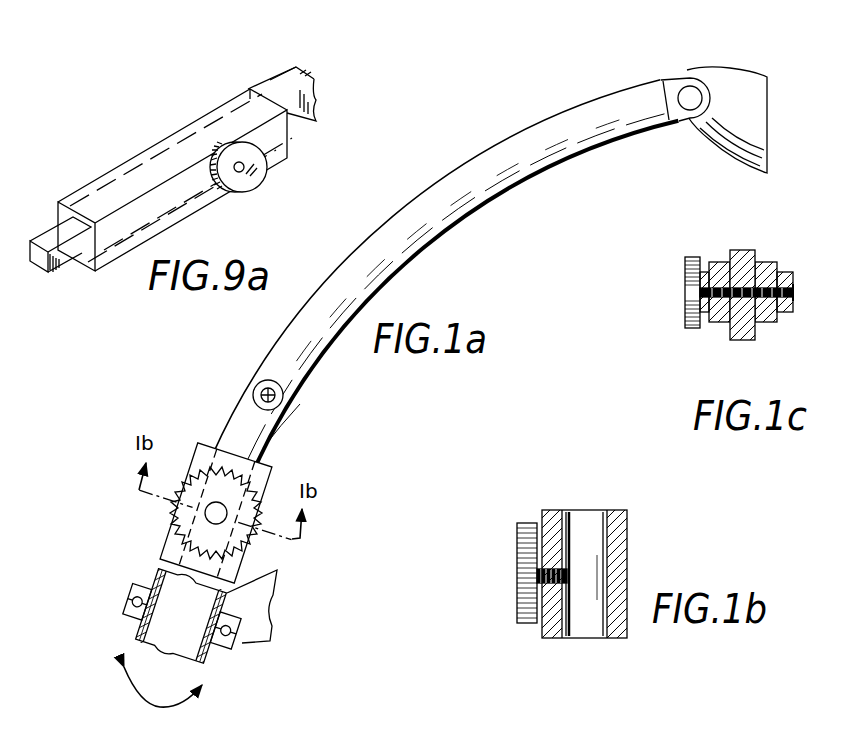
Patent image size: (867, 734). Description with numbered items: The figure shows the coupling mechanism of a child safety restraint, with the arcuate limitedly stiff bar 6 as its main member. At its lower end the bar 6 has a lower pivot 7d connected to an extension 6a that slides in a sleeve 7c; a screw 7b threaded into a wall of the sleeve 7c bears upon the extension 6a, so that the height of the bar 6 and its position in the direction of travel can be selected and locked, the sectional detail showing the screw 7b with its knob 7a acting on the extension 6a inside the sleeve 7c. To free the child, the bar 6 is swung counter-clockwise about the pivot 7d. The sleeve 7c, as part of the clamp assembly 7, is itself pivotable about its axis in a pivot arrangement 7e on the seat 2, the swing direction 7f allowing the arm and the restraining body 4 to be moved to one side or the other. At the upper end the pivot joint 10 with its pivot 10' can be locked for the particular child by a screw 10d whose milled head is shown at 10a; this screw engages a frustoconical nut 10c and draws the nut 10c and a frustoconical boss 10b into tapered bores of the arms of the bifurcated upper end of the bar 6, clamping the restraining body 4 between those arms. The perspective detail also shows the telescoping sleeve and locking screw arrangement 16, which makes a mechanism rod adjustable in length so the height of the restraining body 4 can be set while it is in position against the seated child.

In FIG. 1A, the seat 2 is at (265, 625).
In FIG. 1C, the restraining body 4 is at (743, 342).
In FIG. 1A, the arcuate limitedly stiff bar 6 is at (462, 206).
In FIG. 1C, the arcuate limitedly stiff bar 6 is at (770, 262).
In FIG. 1A, the extension 6a is at (285, 438).
In FIG. 1B, the extension 6a is at (582, 540).
In FIG. 1A, the clamp assembly 7 is at (173, 638).
In FIG. 1B, the clamp assembly 7 is at (523, 645).
In FIG. 1B, the knurled knob 7a is at (525, 550).
In FIG. 1A, the screw 7b is at (216, 513).
In FIG. 1B, the screw 7b is at (538, 580).
In FIG. 1A, the sleeve 7c is at (217, 458).
In FIG. 1B, the sleeve 7c is at (613, 527).
In FIG. 1A, the lower pivot 7d is at (282, 398).
In FIG. 1A, the pivot arrangement 7e is at (130, 604).
In FIG. 1A, the pivoting direction 7f is at (182, 707).
In FIG. 1A, the pivot joint 10 is at (680, 141).
In FIG. 1A, the pivot 10' is at (684, 65).
In FIG. 1C, the milled head 10a is at (698, 284).
In FIG. 1C, the frustoconical boss 10b is at (708, 312).
In FIG. 1C, the frustoconical nut 10c is at (783, 313).
In FIG. 1C, the screw 10d is at (794, 290).
In FIG. 9A, the telescoping sleeve and locking screw arrangement 16 is at (270, 160).